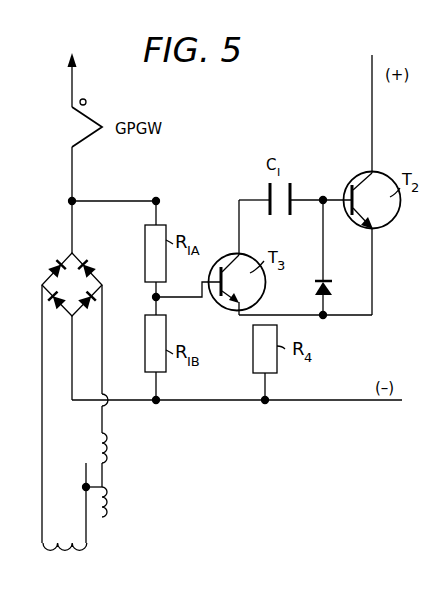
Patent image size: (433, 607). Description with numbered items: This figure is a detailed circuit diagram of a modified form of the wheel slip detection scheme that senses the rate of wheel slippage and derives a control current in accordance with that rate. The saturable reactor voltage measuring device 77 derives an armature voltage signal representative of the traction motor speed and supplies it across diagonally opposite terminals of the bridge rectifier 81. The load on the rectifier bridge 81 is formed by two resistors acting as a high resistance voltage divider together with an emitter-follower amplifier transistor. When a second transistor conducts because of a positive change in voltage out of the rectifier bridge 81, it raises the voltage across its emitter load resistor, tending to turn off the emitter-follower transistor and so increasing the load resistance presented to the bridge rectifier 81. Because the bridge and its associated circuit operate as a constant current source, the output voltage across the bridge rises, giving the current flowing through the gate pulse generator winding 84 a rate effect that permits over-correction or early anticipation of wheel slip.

The gate pulse generator control winding 84 is at (92, 137).
The bridge rectifier 81 is at (90, 264).
The saturable reactor voltage measuring device 77 is at (80, 464).